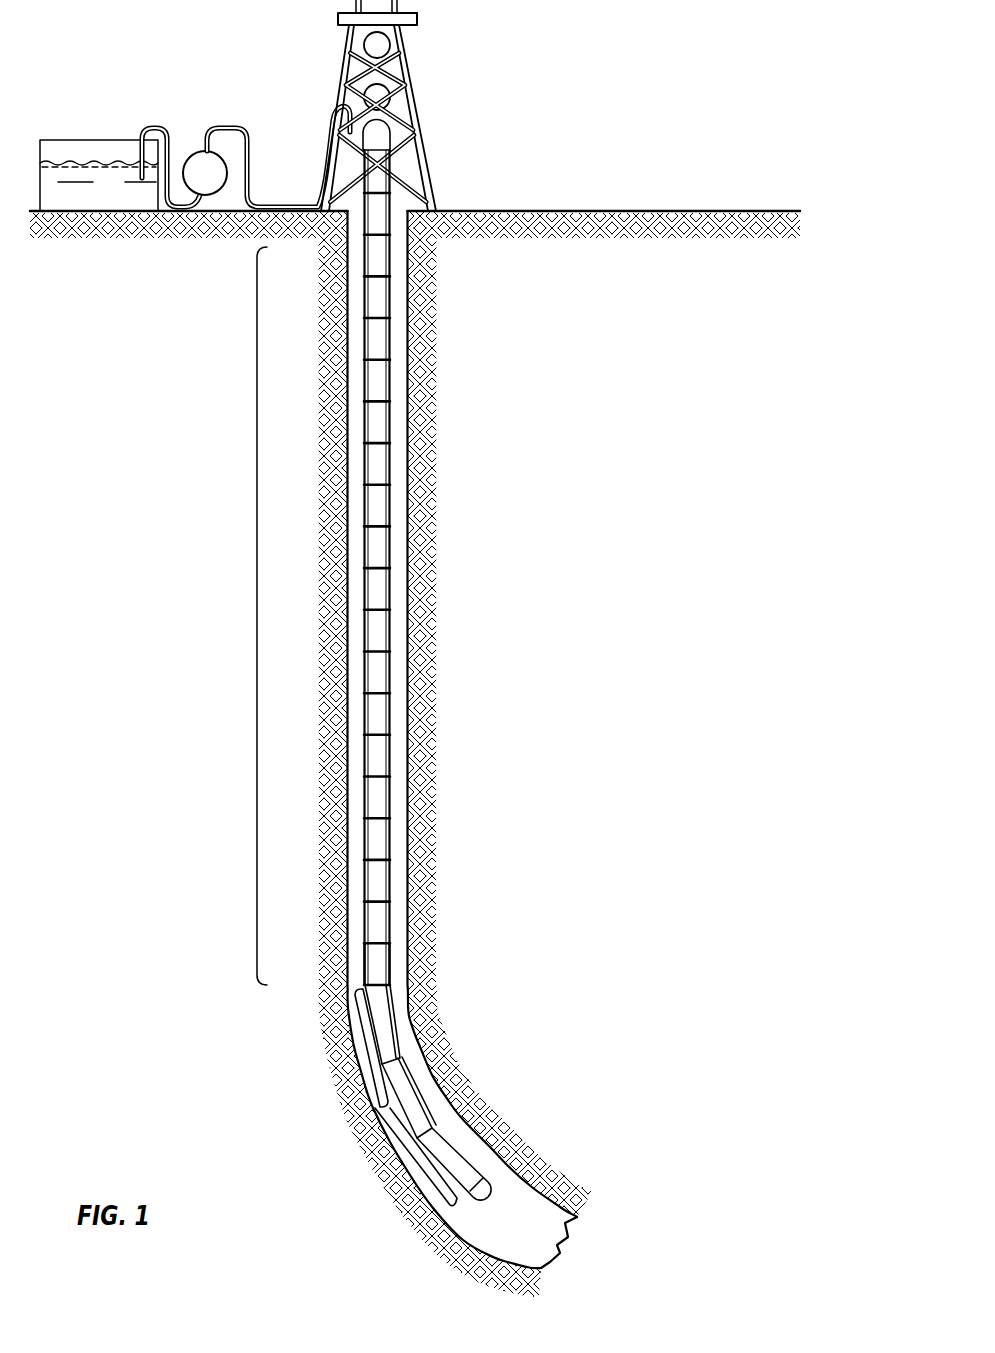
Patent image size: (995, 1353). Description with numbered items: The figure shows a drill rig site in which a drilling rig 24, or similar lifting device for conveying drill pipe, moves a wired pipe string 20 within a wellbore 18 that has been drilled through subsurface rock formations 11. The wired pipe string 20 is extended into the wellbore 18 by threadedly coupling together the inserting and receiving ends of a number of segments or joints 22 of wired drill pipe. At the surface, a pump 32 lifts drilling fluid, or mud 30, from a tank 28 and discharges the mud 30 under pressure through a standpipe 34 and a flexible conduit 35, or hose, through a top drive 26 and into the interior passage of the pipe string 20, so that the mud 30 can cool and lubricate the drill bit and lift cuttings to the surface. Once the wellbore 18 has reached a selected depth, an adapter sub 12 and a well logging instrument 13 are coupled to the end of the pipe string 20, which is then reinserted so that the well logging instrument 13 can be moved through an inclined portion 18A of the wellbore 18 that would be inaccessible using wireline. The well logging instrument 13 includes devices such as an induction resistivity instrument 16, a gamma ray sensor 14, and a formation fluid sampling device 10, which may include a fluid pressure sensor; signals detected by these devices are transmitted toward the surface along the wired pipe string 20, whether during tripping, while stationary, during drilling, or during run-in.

The formation fluid sampling device 10 is at (393, 1017).
The subsurface rock formations 11 is at (579, 646).
The adapter sub 12 is at (390, 963).
The well logging instrument 13 is at (383, 1107).
The gamma ray sensor 14 is at (412, 1077).
The induction resistivity instrument 16 is at (477, 1130).
The wellbore 18 is at (443, 567).
The inclined portion of the wellbore 18A is at (523, 1210).
The wired pipe string 20 is at (257, 628).
The segments of wired drill pipe 22 is at (392, 328).
The drilling rig 24 is at (382, 105).
The top drive 26 is at (400, 140).
The tank 28 is at (73, 140).
The drilling fluid 30 is at (102, 195).
The pump 32 is at (193, 152).
The standpipe 34 is at (335, 122).
The flexible conduit 35 is at (355, 106).